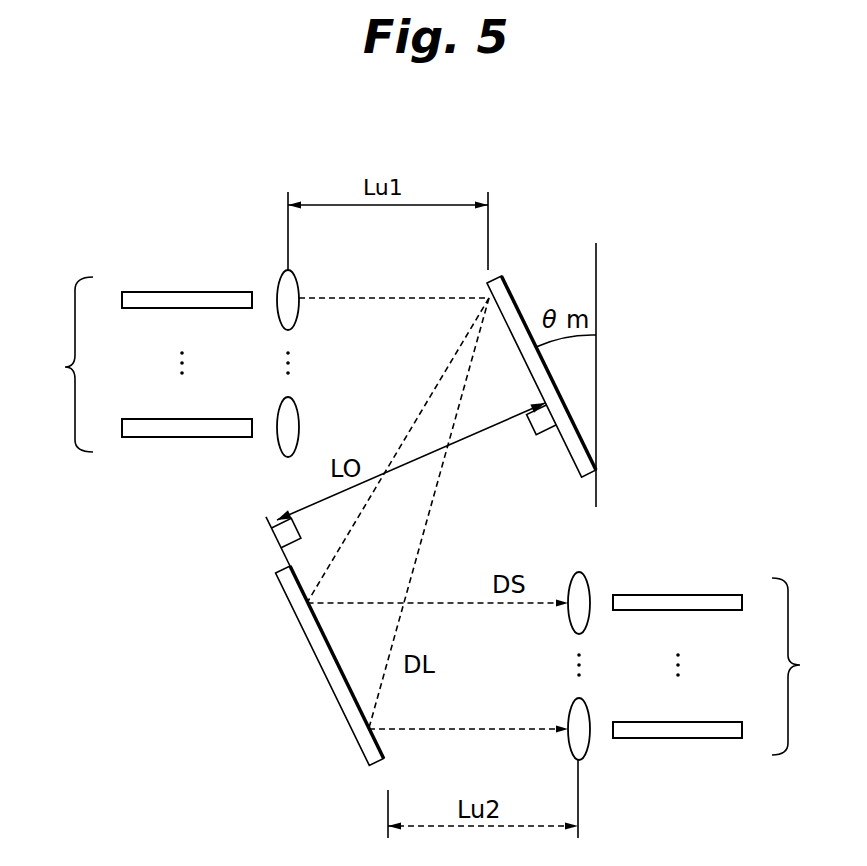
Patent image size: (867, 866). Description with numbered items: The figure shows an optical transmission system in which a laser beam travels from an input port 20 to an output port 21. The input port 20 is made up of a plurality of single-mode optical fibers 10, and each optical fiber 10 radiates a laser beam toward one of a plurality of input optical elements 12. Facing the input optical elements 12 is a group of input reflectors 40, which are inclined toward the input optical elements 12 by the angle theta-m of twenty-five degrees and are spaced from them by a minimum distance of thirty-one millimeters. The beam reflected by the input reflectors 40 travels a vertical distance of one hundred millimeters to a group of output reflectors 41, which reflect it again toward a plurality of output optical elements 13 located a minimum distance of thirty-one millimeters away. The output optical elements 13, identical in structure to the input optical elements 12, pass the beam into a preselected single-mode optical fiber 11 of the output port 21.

The single-mode optical fiber 10 is at (150, 291).
The single-mode optical fiber 11 is at (712, 593).
The input optical element 12 is at (278, 287).
The output optical element 13 is at (590, 578).
The input port 20 is at (163, 323).
The output port 21 is at (703, 629).
The input reflector 40 is at (583, 443).
The output reflector 41 is at (322, 668).